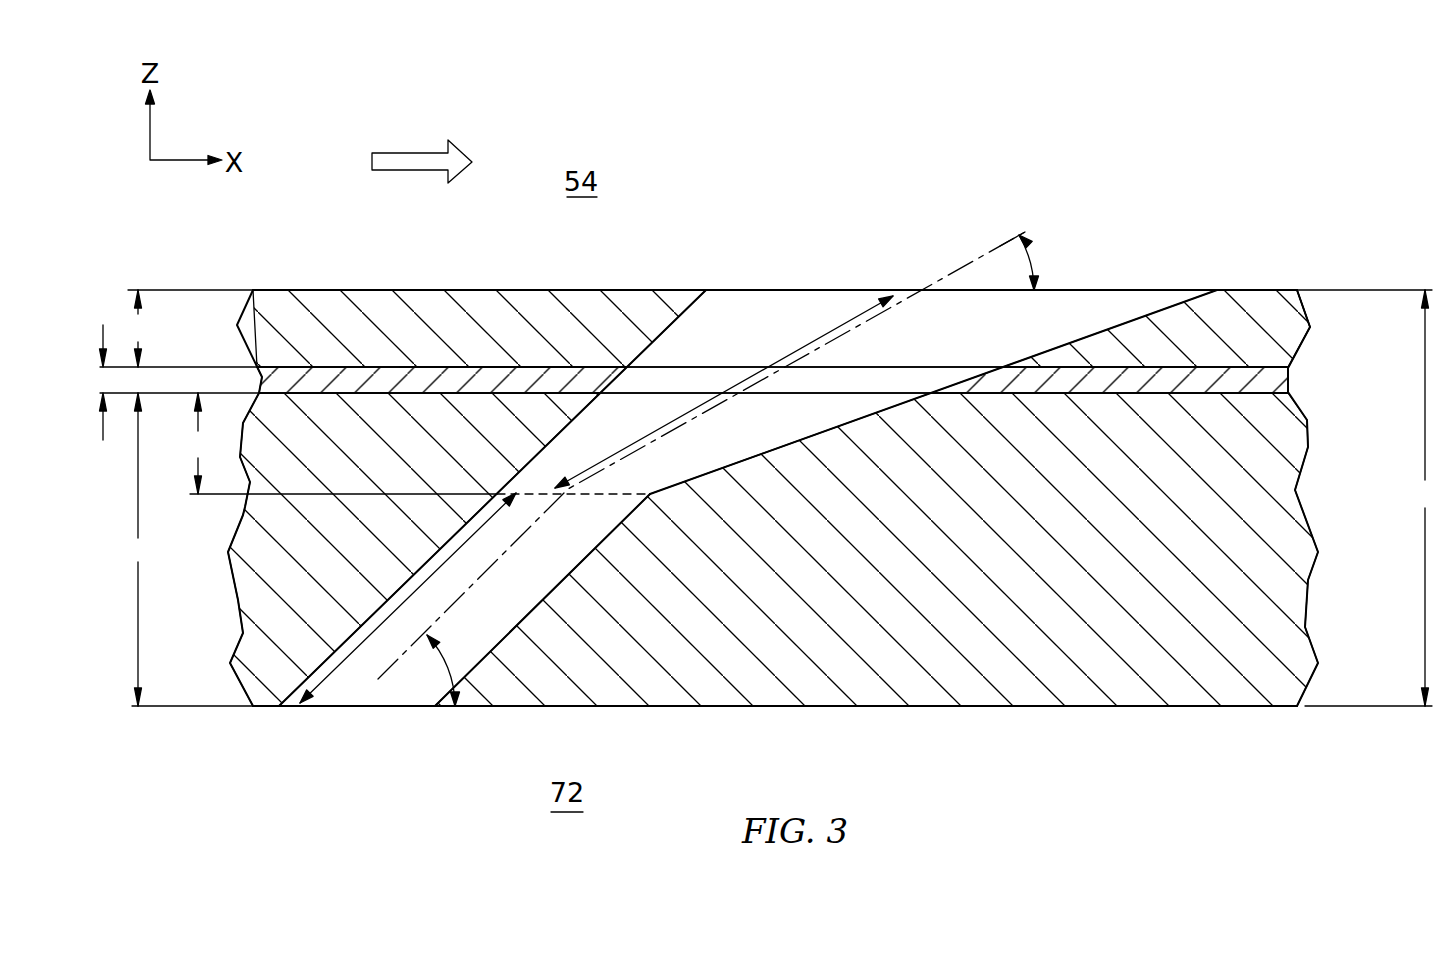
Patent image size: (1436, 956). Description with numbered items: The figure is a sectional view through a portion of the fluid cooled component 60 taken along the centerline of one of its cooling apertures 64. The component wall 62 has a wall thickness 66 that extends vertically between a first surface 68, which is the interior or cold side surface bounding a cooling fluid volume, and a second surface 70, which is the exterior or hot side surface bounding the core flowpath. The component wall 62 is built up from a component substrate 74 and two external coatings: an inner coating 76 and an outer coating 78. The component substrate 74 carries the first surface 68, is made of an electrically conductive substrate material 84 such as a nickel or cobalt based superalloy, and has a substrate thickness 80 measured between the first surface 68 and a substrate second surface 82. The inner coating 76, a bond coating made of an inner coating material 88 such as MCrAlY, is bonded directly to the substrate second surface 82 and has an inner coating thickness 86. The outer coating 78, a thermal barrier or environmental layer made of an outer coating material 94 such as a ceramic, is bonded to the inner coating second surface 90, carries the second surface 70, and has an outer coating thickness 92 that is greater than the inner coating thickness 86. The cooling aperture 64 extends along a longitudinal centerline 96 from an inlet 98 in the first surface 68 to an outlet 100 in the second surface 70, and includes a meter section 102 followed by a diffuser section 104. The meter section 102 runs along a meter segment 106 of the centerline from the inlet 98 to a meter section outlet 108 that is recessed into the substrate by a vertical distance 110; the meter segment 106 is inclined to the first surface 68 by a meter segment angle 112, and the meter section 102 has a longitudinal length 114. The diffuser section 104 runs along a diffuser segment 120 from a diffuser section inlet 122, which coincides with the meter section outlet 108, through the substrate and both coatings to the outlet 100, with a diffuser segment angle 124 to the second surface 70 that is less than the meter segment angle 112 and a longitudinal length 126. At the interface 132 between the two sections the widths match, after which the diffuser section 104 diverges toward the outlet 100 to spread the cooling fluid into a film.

The fluid cooled component 60 is at (1283, 166).
The component wall 62 is at (1247, 275).
The cooling aperture 64 is at (1140, 295).
The wall thickness 66 is at (1421, 498).
The component first surface 68 is at (264, 706).
The component second surface 70 is at (298, 288).
The component substrate 74 is at (1328, 588).
The inner coating 76 is at (1307, 381).
The outer coating 78 is at (1328, 335).
The substrate thickness 80 is at (138, 549).
The substrate second surface 82 is at (403, 392).
The substrate material 84 is at (1235, 692).
The inner coating thickness 86 is at (103, 440).
The inner coating material 88 is at (1268, 375).
The inner coating second surface 90 is at (487, 365).
The outer coating thickness 92 is at (138, 328).
The outer coating material 94 is at (1278, 318).
The longitudinal centerline 96 is at (912, 313).
The cooling aperture inlet 98 is at (492, 539).
The cooling aperture outlet 100 is at (874, 356).
The meter section 102 is at (493, 633).
The diffuser section 104 is at (655, 352).
The meter segment 106 is at (389, 706).
The meter section outlet 108 is at (537, 493).
The vertical distance 110 is at (334, 443).
The meter segment angle 112 is at (452, 668).
The meter section longitudinal length 114 is at (417, 590).
The diffuser segment 120 is at (701, 455).
The diffuser section inlet 122 is at (557, 490).
The diffuser segment angle 124 is at (1033, 258).
The diffuser section longitudinal length 126 is at (724, 392).
The interface 132 is at (659, 502).